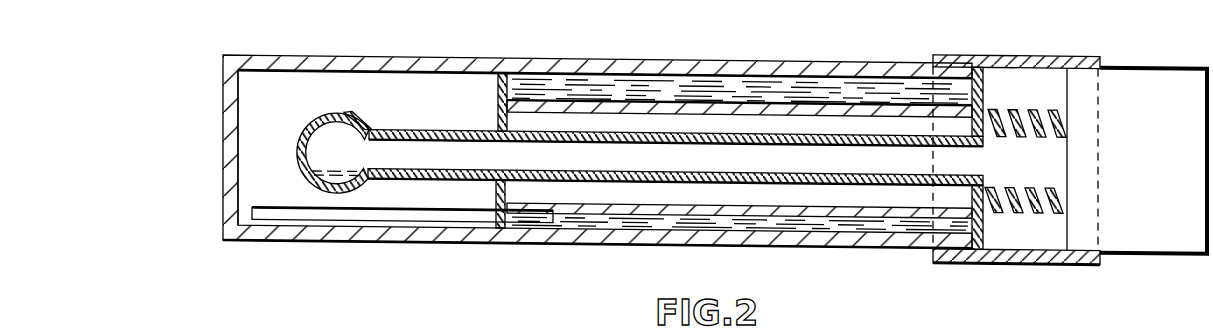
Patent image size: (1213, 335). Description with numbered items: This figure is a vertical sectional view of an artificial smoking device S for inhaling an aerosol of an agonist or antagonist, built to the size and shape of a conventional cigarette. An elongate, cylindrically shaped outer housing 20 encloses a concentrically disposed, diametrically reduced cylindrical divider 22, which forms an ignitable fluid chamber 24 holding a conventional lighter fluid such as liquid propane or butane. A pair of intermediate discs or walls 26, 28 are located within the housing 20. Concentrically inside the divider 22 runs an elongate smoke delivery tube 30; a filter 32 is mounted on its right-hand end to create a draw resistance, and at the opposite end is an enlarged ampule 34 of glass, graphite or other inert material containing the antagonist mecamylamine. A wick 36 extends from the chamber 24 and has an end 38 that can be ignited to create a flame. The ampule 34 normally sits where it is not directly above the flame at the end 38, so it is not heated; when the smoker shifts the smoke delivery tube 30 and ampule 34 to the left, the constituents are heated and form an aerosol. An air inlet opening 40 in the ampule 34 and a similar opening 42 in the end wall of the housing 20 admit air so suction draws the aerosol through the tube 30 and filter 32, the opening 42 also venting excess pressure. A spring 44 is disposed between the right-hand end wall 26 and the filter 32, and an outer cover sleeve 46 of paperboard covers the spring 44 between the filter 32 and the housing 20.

The shock absorber / damper assembly S is at (608, 38).
The outer housing 20 is at (525, 55).
The divider 22 is at (838, 97).
The ignitable fluid chamber 24 is at (780, 87).
The intermediate wall 26 is at (984, 81).
The intermediate wall 28 is at (496, 108).
The smoke delivery tube 30 is at (636, 161).
The filter 32 is at (1130, 75).
The ampule 34 is at (373, 121).
The wick 36 is at (435, 208).
The end 38 is at (285, 206).
The air inlet opening 40 is at (326, 112).
The opening 42 is at (231, 110).
The spring 44 is at (1005, 206).
The outer cover sleeve 46 is at (1062, 46).